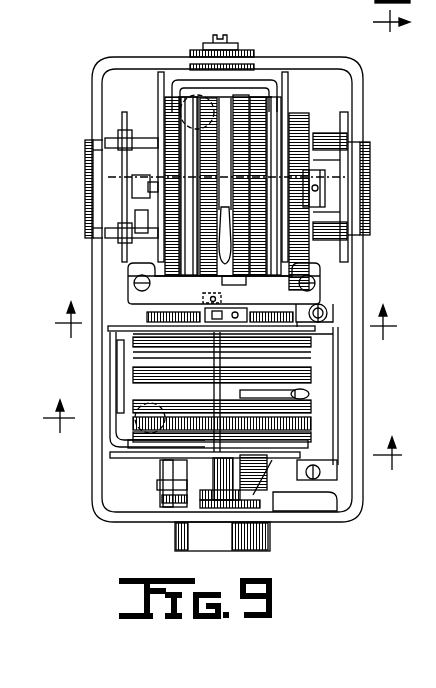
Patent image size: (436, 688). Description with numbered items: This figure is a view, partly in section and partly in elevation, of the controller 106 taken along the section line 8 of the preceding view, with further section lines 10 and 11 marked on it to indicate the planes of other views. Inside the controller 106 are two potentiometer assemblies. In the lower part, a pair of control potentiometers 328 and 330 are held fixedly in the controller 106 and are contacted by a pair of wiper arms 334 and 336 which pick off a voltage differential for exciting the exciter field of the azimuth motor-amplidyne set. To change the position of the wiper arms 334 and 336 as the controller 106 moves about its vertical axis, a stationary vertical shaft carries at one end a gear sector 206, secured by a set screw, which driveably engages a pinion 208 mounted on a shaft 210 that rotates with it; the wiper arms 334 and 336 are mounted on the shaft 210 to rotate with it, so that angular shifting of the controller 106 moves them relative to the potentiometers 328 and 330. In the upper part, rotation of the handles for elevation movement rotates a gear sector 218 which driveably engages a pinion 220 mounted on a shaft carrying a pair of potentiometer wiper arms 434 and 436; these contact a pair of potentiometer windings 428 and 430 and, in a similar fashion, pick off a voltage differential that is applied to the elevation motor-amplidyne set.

The controller 106 is at (362, 109).
The section line 8 is at (400, 16).
The potentiometer winding 430 is at (212, 100).
The potentiometer winding 428 is at (240, 107).
The potentiometer wiper arm 436 is at (214, 275).
The potentiometer wiper arm 434 is at (224, 283).
The gear sector 218 is at (298, 117).
The pinion 220 is at (140, 147).
The gear sector 206 is at (332, 318).
The pinion 208 is at (187, 322).
The control potentiometer 328 is at (148, 373).
The control potentiometer 330 is at (150, 410).
The wiper arm 336 is at (310, 392).
The wiper arm 334 is at (304, 395).
The shaft 210 is at (220, 473).
The section line 10 is at (226, 309).
The section line 11 is at (222, 427).